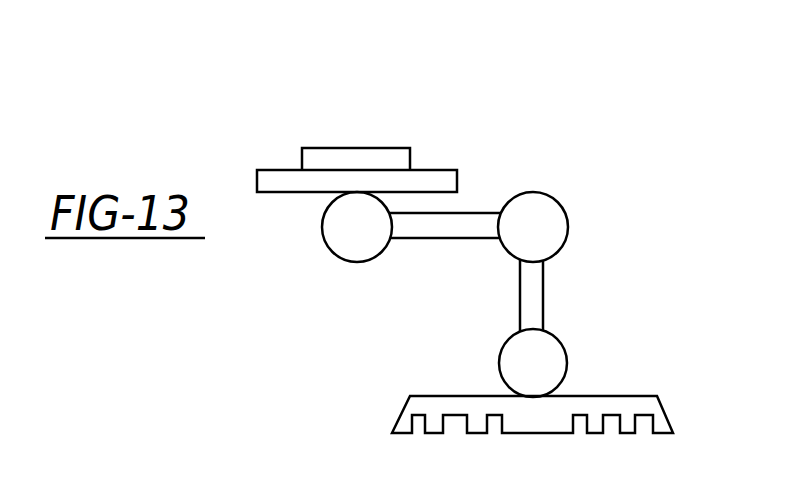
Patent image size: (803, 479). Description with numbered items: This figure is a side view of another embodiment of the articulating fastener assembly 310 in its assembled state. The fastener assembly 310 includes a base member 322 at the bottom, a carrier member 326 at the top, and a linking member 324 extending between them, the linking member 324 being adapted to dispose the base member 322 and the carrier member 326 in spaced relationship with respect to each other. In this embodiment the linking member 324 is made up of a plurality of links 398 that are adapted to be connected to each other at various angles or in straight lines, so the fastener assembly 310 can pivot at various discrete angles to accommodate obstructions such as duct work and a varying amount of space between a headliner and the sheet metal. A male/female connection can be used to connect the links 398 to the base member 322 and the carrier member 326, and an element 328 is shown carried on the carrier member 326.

The fastener assembly 310 is at (613, 276).
The base member 322 is at (672, 401).
The linking member 324 is at (593, 204).
The carrier member 326 is at (469, 165).
The workpiece / mount 328 is at (357, 147).
The links 398 is at (417, 240).